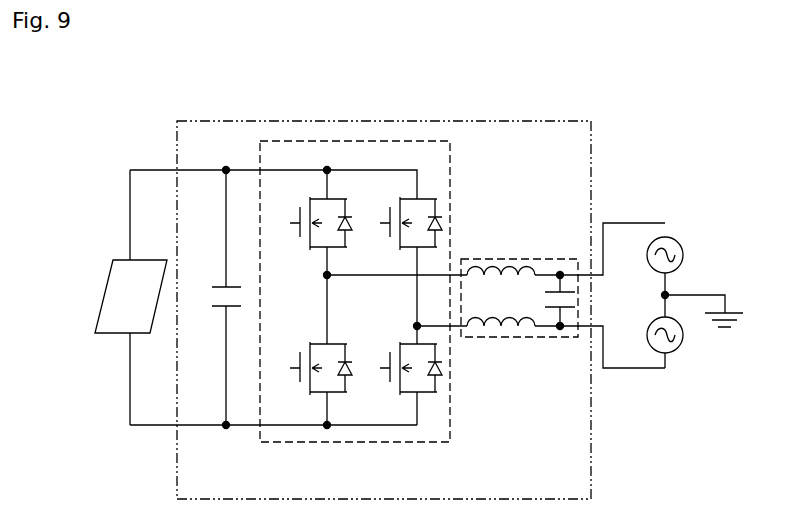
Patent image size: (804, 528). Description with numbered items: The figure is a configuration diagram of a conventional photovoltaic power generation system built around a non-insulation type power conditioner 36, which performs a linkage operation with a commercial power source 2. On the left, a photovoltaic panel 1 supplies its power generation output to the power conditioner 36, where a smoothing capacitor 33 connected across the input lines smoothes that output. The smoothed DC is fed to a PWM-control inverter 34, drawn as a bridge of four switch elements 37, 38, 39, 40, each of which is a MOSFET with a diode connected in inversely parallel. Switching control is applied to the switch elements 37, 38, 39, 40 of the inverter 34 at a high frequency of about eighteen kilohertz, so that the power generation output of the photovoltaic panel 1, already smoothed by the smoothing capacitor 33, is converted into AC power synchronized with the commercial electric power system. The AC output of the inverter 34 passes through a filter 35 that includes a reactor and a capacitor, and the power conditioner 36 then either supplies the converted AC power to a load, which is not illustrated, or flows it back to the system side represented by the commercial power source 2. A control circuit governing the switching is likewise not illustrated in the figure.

The photovoltaic panel 1 is at (102, 312).
The commercial power source 2 is at (683, 245).
The smoothing capacitor 33 is at (219, 309).
The PWM-control inverter 34 is at (352, 443).
The filter 35 is at (505, 339).
The power conditioner 36 is at (358, 121).
The switch element 37 is at (306, 248).
The switch element 38 is at (306, 346).
The switch element 39 is at (398, 249).
The switch element 40 is at (397, 347).